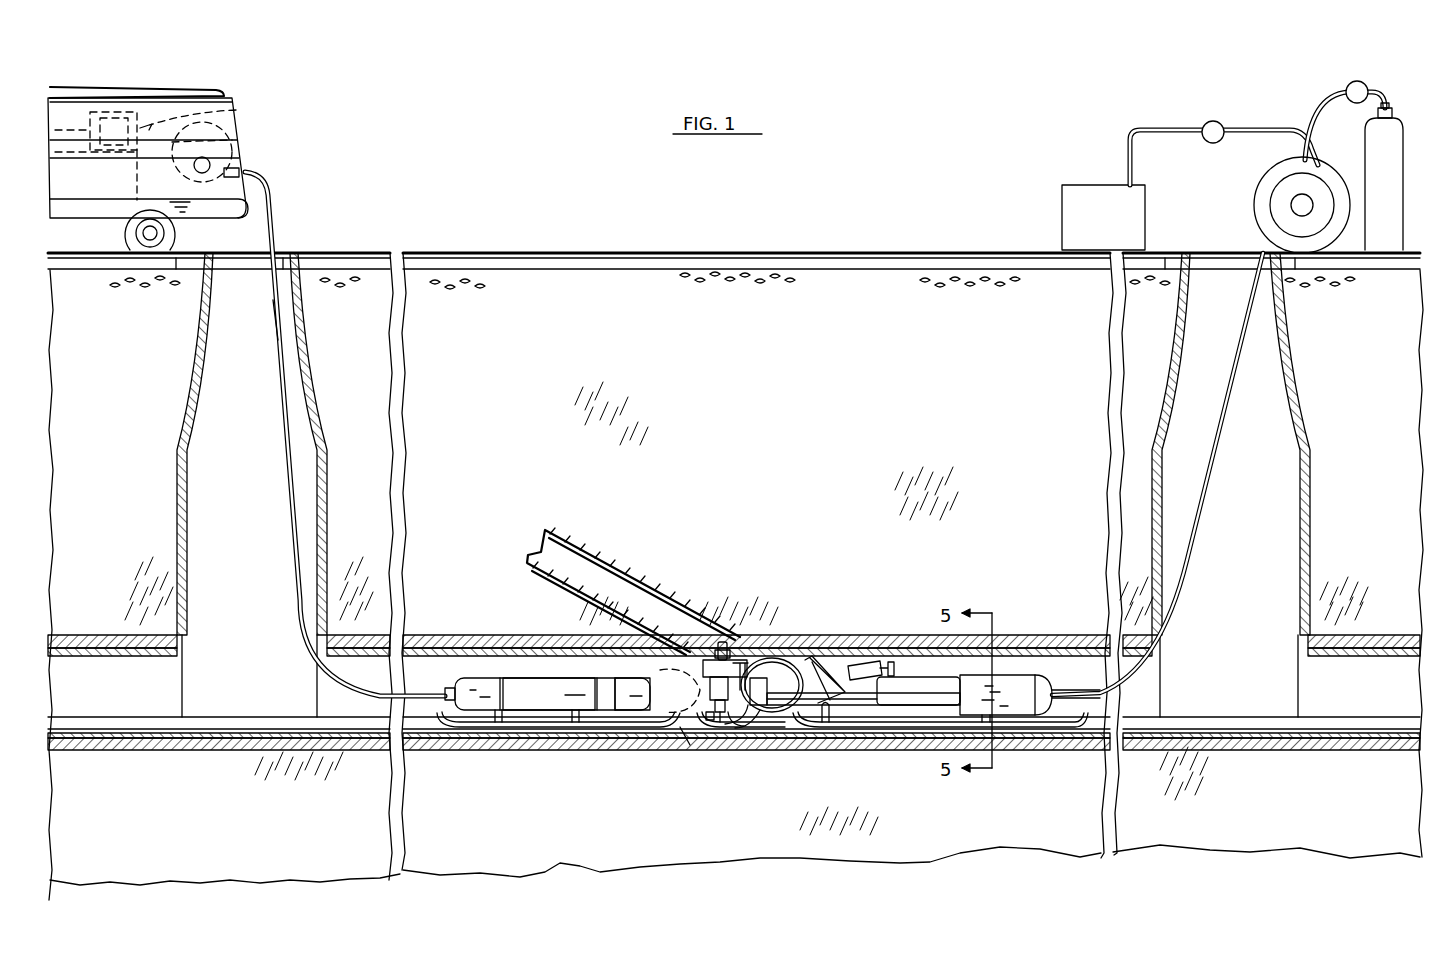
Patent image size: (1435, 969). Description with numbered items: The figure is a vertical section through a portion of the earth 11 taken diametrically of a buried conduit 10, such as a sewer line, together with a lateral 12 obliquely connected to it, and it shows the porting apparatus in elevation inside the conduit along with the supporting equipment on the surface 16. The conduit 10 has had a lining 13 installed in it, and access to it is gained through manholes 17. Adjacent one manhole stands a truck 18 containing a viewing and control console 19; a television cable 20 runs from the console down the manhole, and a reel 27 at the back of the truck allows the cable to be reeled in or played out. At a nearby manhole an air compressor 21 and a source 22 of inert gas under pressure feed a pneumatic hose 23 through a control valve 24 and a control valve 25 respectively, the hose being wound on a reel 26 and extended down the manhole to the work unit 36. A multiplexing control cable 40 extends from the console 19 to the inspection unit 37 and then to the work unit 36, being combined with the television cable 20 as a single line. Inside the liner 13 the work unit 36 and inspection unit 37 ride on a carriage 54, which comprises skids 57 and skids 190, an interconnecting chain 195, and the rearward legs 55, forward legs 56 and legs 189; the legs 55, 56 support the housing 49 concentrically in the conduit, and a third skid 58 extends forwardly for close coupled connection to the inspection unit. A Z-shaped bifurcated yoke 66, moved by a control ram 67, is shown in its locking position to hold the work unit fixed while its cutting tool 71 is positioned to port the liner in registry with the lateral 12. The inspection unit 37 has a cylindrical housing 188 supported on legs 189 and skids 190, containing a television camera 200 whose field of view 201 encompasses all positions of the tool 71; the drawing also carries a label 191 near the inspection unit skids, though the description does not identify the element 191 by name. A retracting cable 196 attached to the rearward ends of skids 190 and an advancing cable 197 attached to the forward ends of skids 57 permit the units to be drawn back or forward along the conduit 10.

The conduit 10 is at (760, 660).
The earth 11 is at (632, 720).
The lateral 12 is at (570, 545).
The lining 13 is at (432, 660).
The surface of the earth 16 is at (770, 252).
The manholes 17 is at (183, 477).
The truck 18 is at (150, 87).
The viewing and control console 19 is at (237, 110).
The television cable 20 is at (290, 450).
The air compressor 21 is at (1103, 217).
The source of inert gas under pressure 22 is at (1384, 176).
The pneumatic hose 23 is at (1230, 382).
The control valve 24 is at (1213, 121).
The control valve 25 is at (1355, 80).
The reel 26 is at (1282, 195).
The reel 27 is at (232, 140).
The work unit 36 is at (935, 675).
The inspection unit 37 is at (530, 672).
The multiplexing control cable 40 is at (278, 340).
The housing 49 is at (1018, 688).
The carriage 54 is at (706, 728).
The rearward legs 55 is at (827, 722).
The forward legs 56 is at (960, 727).
The skids 57 is at (1035, 728).
The third skid 58 is at (745, 728).
The bifurcated yoke 66 is at (790, 655).
The control ram 67 is at (880, 665).
The cutting tool 71 is at (720, 648).
The cylindrical housing 188 is at (549, 694).
The legs 189 is at (498, 722).
The skids 190 is at (690, 745).
The camera skid 191 is at (470, 728).
The chain 195 is at (712, 720).
The retracting cable 196 is at (200, 717).
The advancing cable 197 is at (1275, 717).
The television camera 200 is at (624, 683).
The field of view 201 is at (678, 690).